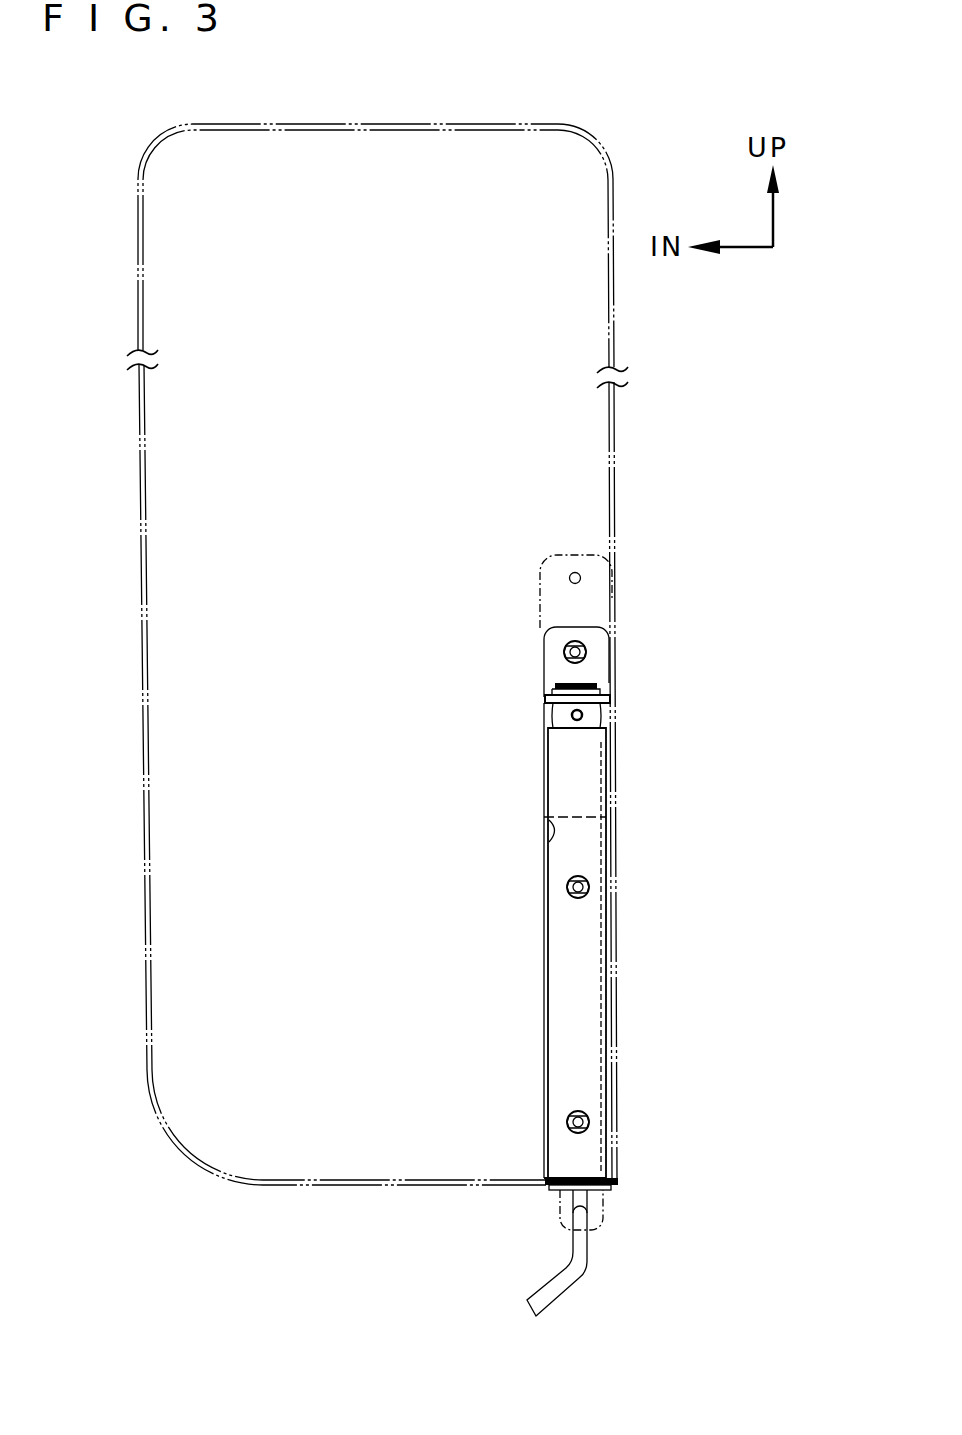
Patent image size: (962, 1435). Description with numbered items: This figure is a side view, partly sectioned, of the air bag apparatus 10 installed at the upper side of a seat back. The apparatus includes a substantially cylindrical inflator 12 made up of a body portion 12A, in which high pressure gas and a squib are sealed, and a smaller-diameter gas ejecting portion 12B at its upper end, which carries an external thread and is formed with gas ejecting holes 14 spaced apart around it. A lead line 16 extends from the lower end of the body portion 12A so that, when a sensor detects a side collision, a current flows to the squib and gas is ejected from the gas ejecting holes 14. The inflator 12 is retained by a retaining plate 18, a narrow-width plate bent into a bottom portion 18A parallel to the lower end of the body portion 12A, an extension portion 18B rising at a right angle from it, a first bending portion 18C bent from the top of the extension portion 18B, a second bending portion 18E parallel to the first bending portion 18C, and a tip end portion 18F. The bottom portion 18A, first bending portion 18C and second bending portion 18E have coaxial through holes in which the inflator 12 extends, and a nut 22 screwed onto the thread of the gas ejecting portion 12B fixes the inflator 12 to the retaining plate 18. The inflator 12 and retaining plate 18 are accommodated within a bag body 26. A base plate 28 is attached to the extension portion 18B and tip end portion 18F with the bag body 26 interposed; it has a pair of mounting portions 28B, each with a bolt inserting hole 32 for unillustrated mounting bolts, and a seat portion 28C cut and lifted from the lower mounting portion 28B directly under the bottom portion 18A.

The air bag apparatus 10 is at (642, 332).
The bag body 26 is at (140, 333).
The base plate 28 is at (530, 575).
The mounting portions 28B is at (556, 556).
The seat portion 28C is at (545, 1193).
The bolt inserting holes 32 is at (582, 555).
The retaining plate 18 is at (530, 902).
The bottom portion 18A is at (567, 1175).
The extension portion 18B is at (545, 941).
The first bending portion 18C is at (550, 840).
The second bending portion 18E is at (548, 701).
The tip end portion 18F is at (548, 660).
The inflator 12 is at (538, 1028).
The body portion 12A is at (597, 970).
The gas ejecting portion 12B is at (598, 713).
The gas ejecting holes 14 is at (577, 722).
The nut 22 is at (600, 688).
The lead line 16 is at (586, 1284).